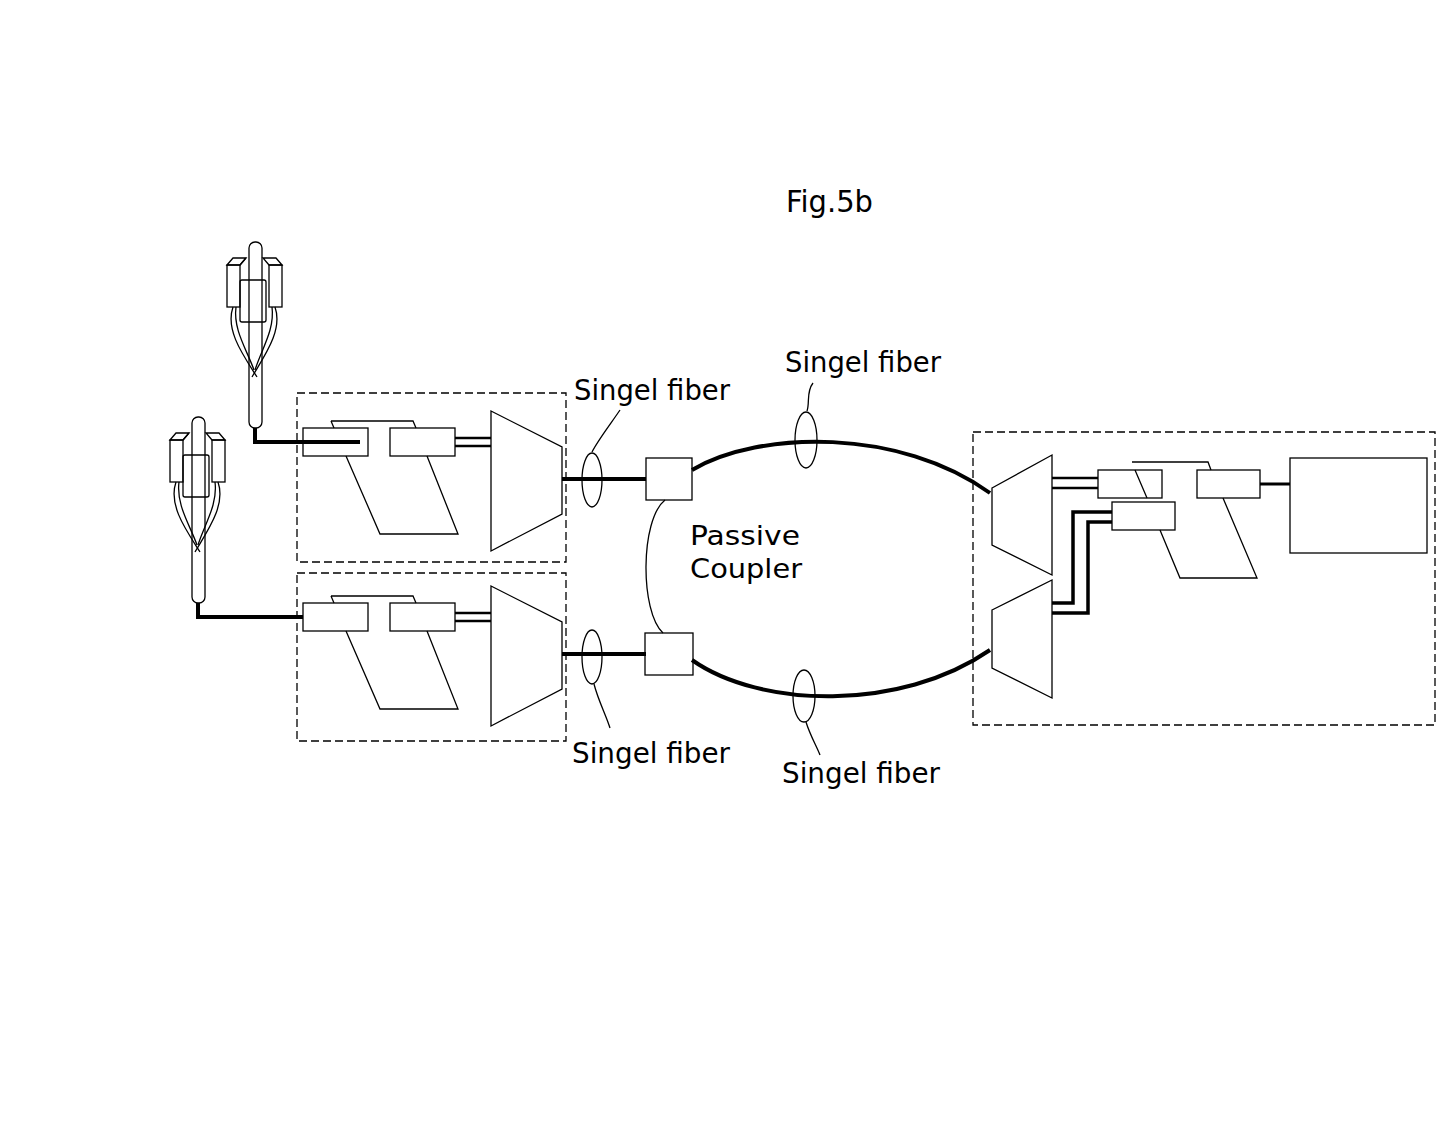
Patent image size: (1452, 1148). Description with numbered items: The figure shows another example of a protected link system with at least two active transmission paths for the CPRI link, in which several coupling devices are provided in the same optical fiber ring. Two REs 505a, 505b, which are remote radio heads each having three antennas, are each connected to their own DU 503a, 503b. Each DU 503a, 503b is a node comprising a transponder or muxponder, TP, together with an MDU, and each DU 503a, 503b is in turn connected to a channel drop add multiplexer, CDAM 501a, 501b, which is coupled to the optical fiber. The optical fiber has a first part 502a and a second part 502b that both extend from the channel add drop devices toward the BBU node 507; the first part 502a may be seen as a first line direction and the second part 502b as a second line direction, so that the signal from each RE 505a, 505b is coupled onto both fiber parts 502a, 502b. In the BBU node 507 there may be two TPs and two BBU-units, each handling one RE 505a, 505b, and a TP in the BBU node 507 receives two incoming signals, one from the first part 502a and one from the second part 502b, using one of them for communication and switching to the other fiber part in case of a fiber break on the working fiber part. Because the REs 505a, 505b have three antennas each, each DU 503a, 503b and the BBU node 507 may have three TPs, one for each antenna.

The CDAM 501a is at (676, 457).
The CDAM 501b is at (665, 677).
The first part of the optical fiber 502a is at (900, 444).
The second part of the optical fiber 502b is at (900, 690).
The DU 503a is at (414, 392).
The DU 503b is at (424, 742).
The RE 505a is at (283, 294).
The RE 505b is at (196, 416).
The BBU node 507 is at (1178, 431).